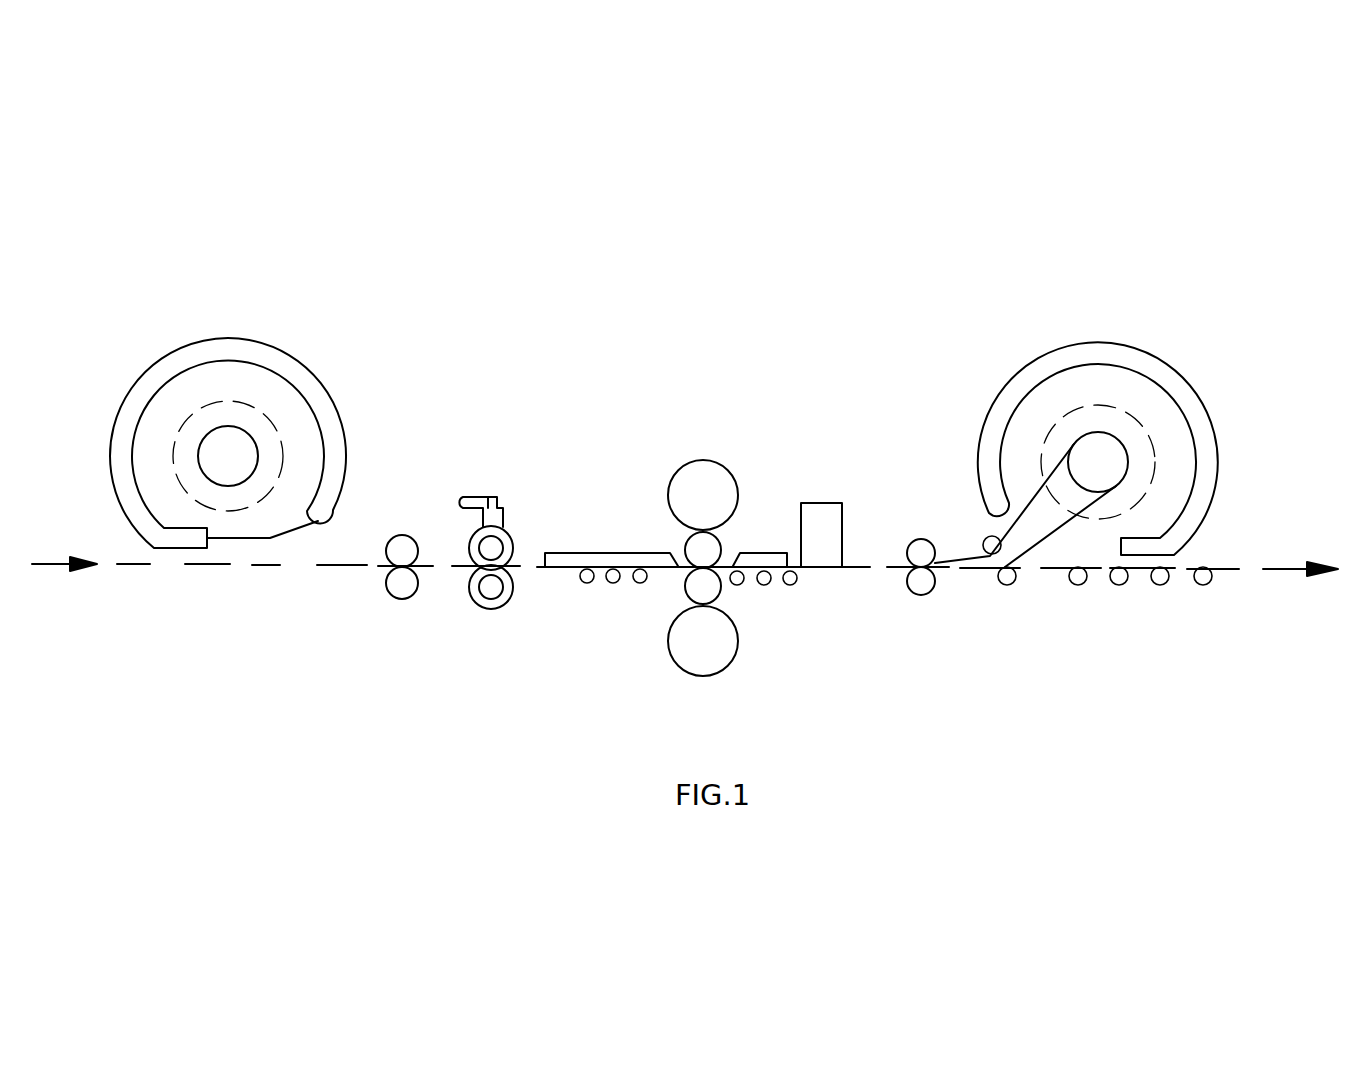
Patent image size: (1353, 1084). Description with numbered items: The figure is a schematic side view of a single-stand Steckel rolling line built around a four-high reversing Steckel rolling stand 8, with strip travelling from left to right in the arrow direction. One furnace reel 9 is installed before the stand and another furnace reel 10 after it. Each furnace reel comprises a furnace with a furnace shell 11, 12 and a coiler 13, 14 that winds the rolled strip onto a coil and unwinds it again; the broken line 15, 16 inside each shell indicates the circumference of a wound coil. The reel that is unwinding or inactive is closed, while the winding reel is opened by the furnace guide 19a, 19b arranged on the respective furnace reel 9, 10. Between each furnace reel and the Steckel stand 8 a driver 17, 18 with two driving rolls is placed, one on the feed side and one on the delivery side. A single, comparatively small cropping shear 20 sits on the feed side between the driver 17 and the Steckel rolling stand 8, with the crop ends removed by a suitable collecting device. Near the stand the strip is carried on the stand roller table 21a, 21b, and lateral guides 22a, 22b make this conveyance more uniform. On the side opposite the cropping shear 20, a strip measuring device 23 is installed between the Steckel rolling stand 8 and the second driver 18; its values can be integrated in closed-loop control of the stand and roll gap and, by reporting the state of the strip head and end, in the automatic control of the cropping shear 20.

The Steckel rolling stand 8 is at (705, 418).
The furnace reel 9 is at (247, 385).
The furnace reel 10 is at (1120, 394).
The furnace shell 11 is at (298, 365).
The furnace shell 12 is at (1160, 377).
The coiler 13 is at (254, 440).
The coiler 14 is at (1123, 448).
The broken line 15 is at (200, 412).
The broken line 16 is at (1063, 415).
The driver 17 is at (401, 612).
The driver 18 is at (908, 612).
The furnace guide 19a is at (293, 533).
The furnace guide 19b is at (1047, 550).
The cropping shear 20 is at (508, 472).
The stand roller table 21a is at (613, 583).
The stand roller table 21b is at (764, 586).
The lateral guide 22a is at (575, 553).
The lateral guide 22b is at (765, 553).
The strip measuring device 23 is at (821, 510).